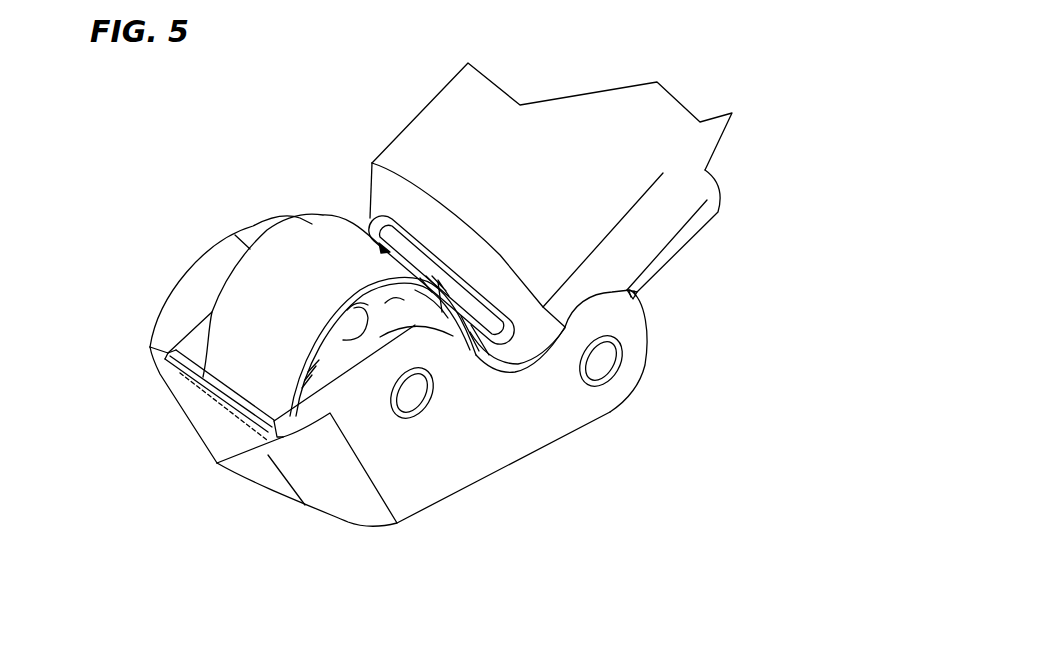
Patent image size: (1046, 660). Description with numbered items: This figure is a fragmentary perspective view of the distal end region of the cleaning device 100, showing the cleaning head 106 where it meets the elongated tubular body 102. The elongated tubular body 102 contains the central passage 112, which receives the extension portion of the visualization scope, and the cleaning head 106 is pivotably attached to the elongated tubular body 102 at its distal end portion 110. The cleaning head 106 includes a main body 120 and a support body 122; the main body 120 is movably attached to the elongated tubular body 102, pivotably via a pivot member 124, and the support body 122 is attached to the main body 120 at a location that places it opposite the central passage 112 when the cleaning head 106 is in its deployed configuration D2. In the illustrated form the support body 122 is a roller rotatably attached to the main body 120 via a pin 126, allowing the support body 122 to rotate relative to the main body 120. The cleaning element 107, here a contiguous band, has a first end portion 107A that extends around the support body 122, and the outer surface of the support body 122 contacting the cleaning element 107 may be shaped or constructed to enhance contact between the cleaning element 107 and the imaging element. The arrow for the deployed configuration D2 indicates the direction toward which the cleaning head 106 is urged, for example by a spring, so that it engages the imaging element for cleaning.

The cleaning device 100 is at (748, 75).
The elongated tubular body 102 is at (468, 97).
The cleaning head 106 is at (377, 505).
The cleaning element 107 is at (233, 290).
The first end portion of the cleaning element 107A is at (268, 244).
The distal end portion 110 is at (590, 262).
The central passage 112 is at (383, 248).
The main body 120 is at (268, 485).
The support body 122 is at (372, 302).
The pivot member 124 is at (598, 367).
The pin 126 is at (408, 398).
The deployed configuration of the cleaning head D2 is at (140, 421).